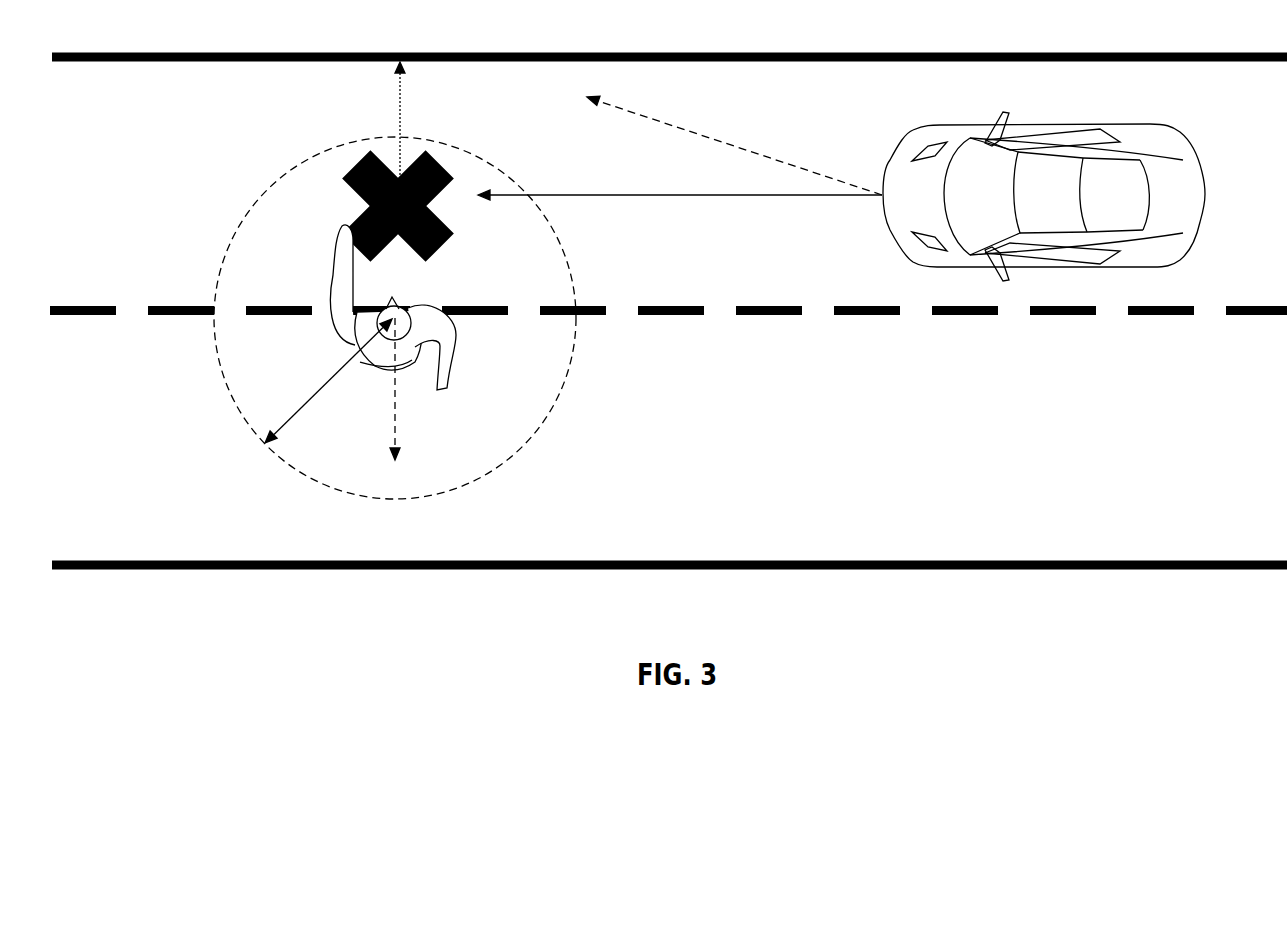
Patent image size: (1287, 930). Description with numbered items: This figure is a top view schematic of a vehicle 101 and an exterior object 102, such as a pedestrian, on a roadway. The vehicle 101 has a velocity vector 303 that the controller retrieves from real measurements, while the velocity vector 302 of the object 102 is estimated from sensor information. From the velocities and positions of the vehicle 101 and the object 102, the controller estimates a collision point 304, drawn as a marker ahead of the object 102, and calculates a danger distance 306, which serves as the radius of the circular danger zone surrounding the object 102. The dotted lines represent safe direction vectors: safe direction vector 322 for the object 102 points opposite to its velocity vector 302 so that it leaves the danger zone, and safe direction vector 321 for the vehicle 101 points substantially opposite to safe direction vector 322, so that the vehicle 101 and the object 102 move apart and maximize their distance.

The vehicle 101 is at (1033, 114).
The object 102 is at (465, 364).
The velocity vector 302 is at (669, 102).
The velocity vector 303 is at (680, 207).
The collision point 304 is at (393, 206).
The danger distance 306 is at (328, 381).
The safe direction vector 321 is at (734, 134).
The safe direction vector 322 is at (414, 389).